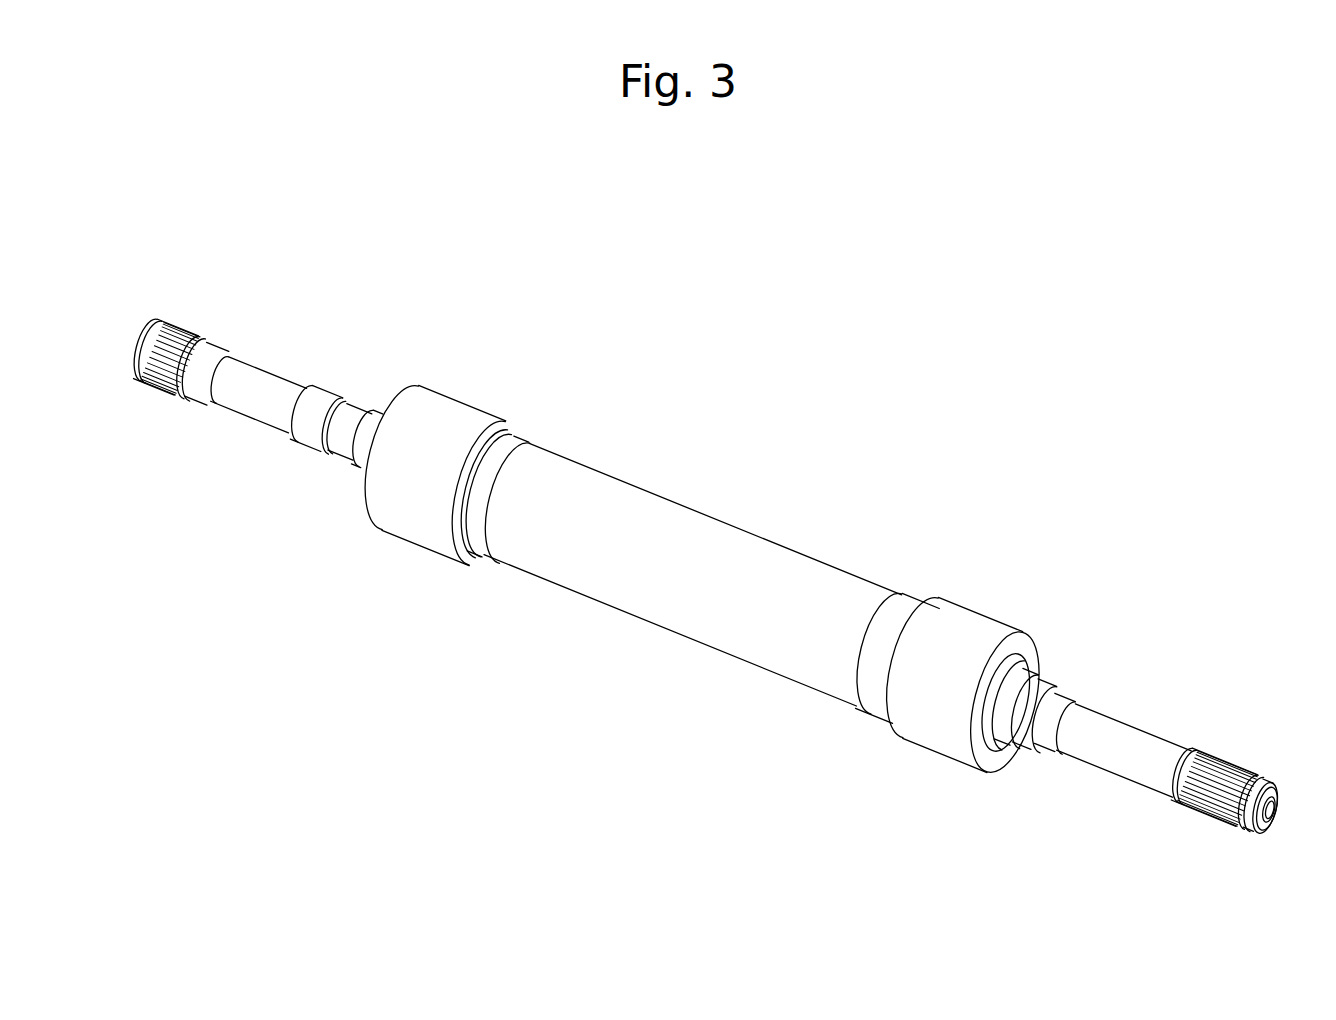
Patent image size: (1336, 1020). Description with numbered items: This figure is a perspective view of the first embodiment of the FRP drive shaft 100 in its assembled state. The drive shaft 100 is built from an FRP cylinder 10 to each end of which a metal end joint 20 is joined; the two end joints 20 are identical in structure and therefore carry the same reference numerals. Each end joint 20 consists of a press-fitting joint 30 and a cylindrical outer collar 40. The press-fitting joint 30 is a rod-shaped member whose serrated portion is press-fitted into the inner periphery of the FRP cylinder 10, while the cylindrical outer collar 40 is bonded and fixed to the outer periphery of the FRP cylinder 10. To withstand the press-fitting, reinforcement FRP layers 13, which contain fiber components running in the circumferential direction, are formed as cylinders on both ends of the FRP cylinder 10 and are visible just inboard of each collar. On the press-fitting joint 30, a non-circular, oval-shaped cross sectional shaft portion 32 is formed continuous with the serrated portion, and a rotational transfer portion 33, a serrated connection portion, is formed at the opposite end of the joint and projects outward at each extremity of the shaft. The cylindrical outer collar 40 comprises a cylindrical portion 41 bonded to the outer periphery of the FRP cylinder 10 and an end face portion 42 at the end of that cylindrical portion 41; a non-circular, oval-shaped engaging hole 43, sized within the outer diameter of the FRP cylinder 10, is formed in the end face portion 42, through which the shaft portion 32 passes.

The FRP drive shaft 100 is at (1140, 356).
The FRP cylinder 10 is at (718, 512).
The reinforcement FRP layer 13 is at (517, 553).
The end joint 20 is at (485, 213).
The press-fitting joint 30 is at (318, 362).
The non-circular cross sectional shaft portion 32 is at (1017, 656).
The rotational transfer portion 33 is at (165, 390).
The cylindrical outer collar 40 is at (475, 388).
The cylindrical portion 41 is at (405, 523).
The end face portion 42 is at (977, 756).
The non-circular engaging hole 43 is at (993, 746).